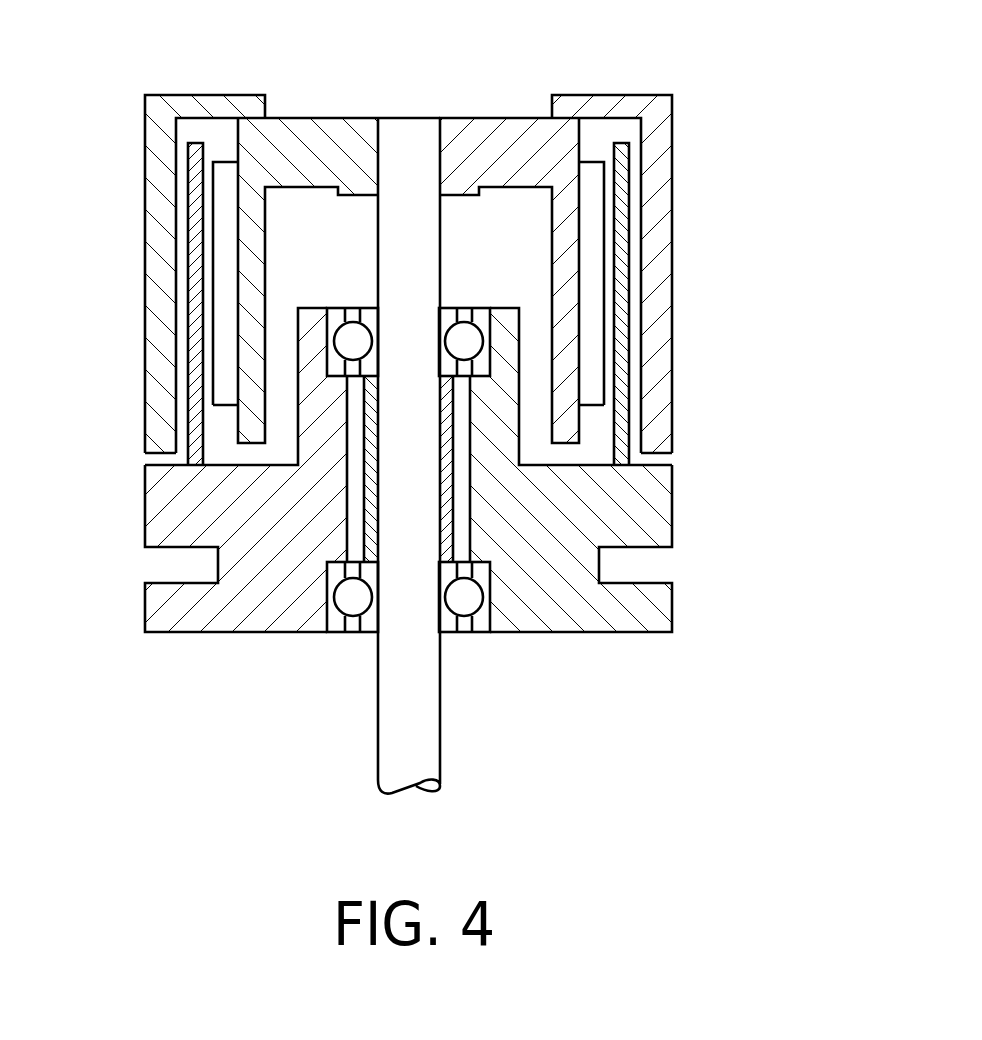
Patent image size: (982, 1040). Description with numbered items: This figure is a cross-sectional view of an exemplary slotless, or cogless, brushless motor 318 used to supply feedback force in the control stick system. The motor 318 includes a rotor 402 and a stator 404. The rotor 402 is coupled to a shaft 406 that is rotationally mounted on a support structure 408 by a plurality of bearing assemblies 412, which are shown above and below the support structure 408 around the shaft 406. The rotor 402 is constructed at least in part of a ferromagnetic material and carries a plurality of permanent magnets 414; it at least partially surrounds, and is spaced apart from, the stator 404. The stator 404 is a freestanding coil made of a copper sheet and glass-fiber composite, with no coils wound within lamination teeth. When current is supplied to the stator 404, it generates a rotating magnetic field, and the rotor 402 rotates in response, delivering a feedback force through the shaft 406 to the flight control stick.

The motor 318 is at (737, 163).
The rotor 402 is at (254, 100).
The stator 404 is at (176, 113).
The shaft 406 is at (407, 127).
The support structure 408 is at (155, 520).
The bearing assemblies 412 is at (338, 308).
The permanent magnets 414 is at (226, 166).